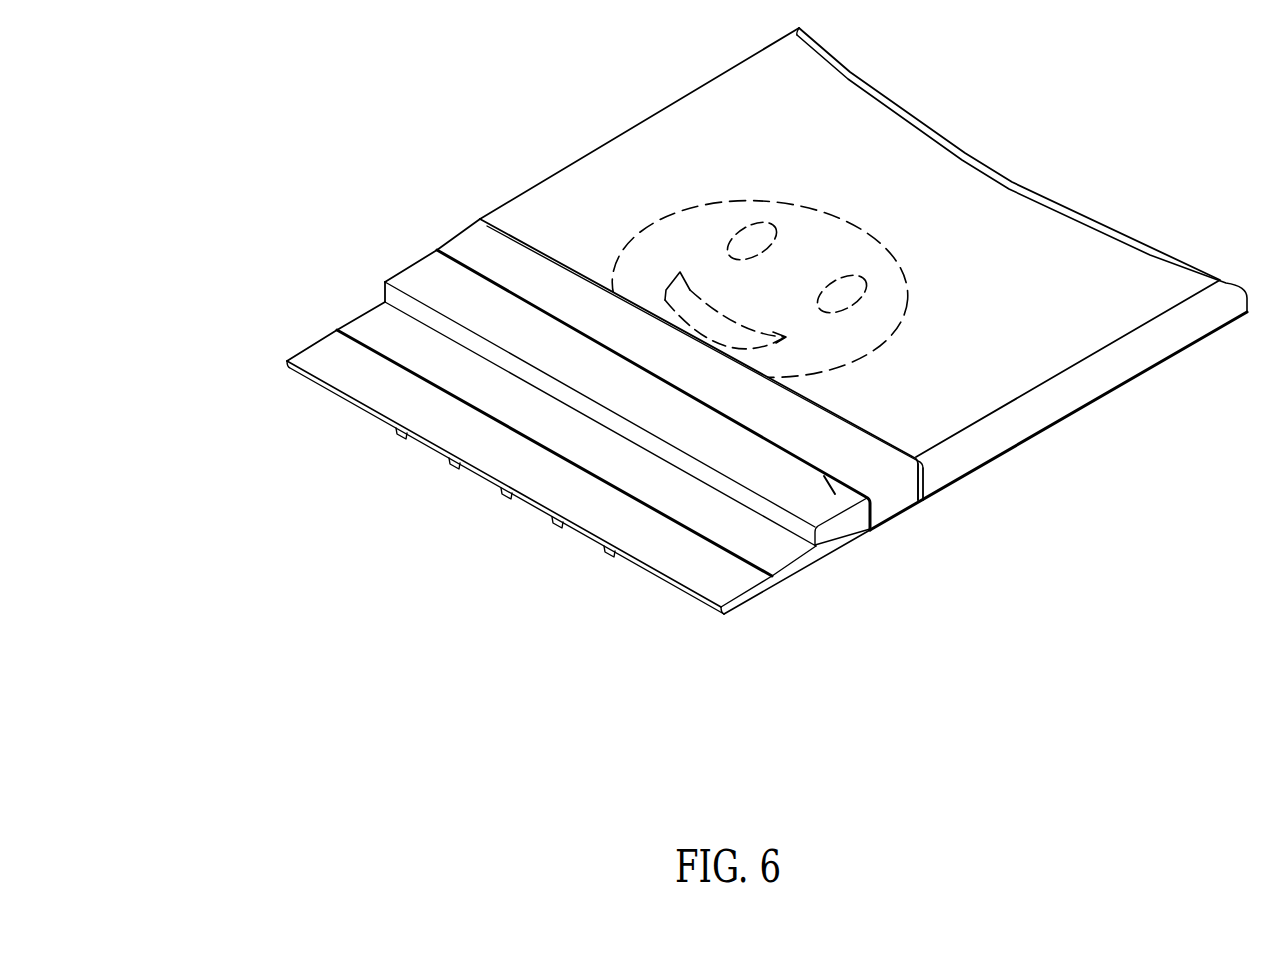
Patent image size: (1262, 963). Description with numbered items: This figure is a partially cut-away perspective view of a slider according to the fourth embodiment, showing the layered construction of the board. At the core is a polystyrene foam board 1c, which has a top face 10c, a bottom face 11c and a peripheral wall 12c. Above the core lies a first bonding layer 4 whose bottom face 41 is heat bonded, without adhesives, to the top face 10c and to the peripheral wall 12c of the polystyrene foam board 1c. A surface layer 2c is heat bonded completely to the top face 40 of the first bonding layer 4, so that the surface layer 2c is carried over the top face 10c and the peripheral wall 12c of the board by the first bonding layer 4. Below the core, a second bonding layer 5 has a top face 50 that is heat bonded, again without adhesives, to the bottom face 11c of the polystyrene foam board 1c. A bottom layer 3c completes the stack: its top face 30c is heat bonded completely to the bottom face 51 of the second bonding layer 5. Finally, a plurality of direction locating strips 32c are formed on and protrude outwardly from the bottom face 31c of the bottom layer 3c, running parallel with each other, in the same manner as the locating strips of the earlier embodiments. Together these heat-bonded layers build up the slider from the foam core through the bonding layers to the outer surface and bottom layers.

The polystyrene foam board 1c is at (398, 293).
The top face 10c is at (422, 282).
The bottom face 11c is at (353, 325).
The peripheral wall 12c is at (827, 537).
The surface layer 2c is at (957, 453).
The bottom layer 3c is at (740, 600).
The top face 30c is at (313, 365).
The bottom face 31c is at (322, 390).
The direction locating strips 32c is at (452, 465).
The first bonding layer 4 is at (893, 500).
The top face 40 is at (467, 243).
The bottom face 41 is at (825, 477).
The second bonding layer 5 is at (790, 565).
The top face 50 is at (347, 322).
The bottom face 51 is at (357, 346).